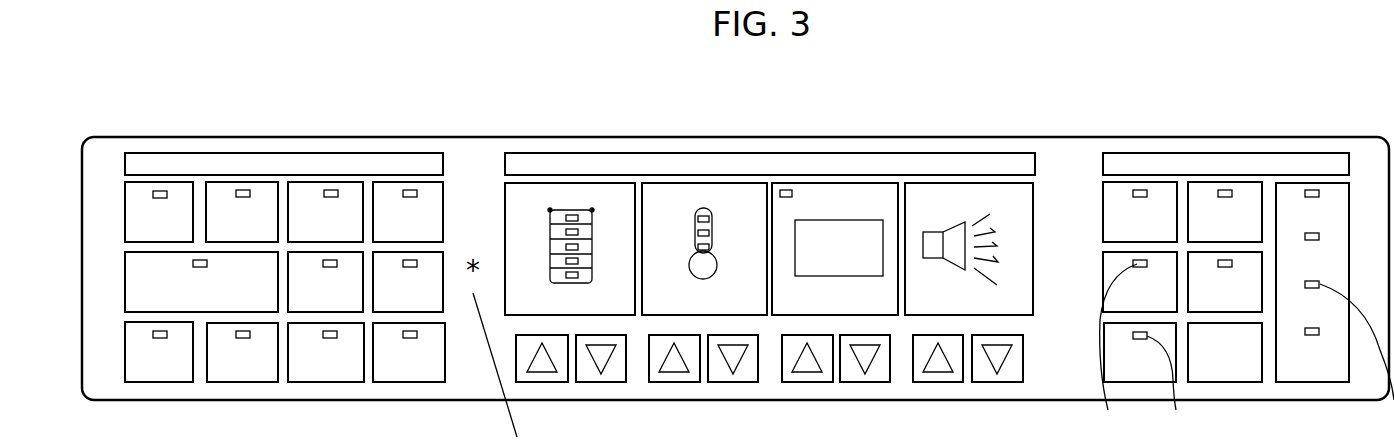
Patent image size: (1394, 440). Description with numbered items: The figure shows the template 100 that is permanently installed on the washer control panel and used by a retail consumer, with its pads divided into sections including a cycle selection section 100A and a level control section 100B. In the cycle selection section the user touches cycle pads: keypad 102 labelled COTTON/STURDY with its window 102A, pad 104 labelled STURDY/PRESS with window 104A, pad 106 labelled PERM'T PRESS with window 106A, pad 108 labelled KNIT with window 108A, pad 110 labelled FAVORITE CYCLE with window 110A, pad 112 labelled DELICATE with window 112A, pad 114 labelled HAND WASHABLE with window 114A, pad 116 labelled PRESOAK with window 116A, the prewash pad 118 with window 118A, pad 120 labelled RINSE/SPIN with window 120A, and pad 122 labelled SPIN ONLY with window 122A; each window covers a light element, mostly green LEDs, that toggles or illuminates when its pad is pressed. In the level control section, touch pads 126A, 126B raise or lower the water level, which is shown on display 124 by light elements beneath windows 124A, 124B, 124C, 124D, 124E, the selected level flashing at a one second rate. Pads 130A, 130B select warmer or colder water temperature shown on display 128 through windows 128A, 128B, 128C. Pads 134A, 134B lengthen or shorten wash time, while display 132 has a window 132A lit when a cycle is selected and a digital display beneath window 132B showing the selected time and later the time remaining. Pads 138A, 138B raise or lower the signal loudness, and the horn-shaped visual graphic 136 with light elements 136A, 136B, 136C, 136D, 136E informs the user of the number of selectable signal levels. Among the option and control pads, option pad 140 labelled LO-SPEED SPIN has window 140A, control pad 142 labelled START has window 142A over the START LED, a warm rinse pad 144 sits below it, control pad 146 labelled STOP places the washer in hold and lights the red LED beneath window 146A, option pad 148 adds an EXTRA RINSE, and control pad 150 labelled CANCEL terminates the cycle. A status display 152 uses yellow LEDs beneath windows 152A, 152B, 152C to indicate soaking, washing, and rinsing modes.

The template 100 is at (99, 150).
The cycle selection section 100A is at (186, 137).
The level control section 100B is at (795, 165).
The keypad 102 is at (132, 215).
The window 102A is at (153, 194).
The pad 104 is at (268, 190).
The window 104A is at (240, 193).
The pad 106 is at (348, 190).
The window 106A is at (325, 193).
The pad 108 is at (428, 197).
The window 108A is at (407, 193).
The pad 110 is at (132, 275).
The window 110A is at (193, 263).
The pad 112 is at (353, 265).
The window 112A is at (337, 262).
The pad 114 is at (438, 265).
The window 114A is at (412, 262).
The pad 116 is at (132, 348).
The window 116A is at (153, 334).
The pad 118 is at (260, 375).
The window 118A is at (238, 334).
The pad 120 is at (352, 372).
The window 120A is at (325, 334).
The pad 122 is at (408, 372).
The window 122A is at (414, 334).
The display 124 is at (540, 240).
The window 124A is at (572, 215).
The window 124B is at (578, 232).
The window 124C is at (578, 247).
The window 124D is at (578, 261).
The window 124E is at (578, 275).
The touch pad 126A is at (545, 365).
The touch pad 126B is at (604, 360).
The display 128 is at (685, 226).
The window 128A is at (705, 218).
The window 128B is at (712, 232).
The window 128C is at (712, 246).
The pad 130A is at (678, 365).
The pad 130B is at (740, 360).
The display 132 is at (843, 205).
The window 132A is at (793, 192).
The window 132B is at (865, 240).
The pad 134A is at (808, 365).
The pad 134B is at (868, 360).
The visual graphic 136 is at (940, 215).
The light element 136A is at (988, 216).
The light element 136B is at (995, 232).
The light element 136C is at (997, 246).
The light element 136D is at (998, 262).
The light element 136E is at (997, 285).
The pad 138A is at (945, 368).
The pad 138B is at (1000, 360).
The option pad 140 is at (1163, 192).
The window 140A is at (1140, 192).
The control pad 142 is at (1252, 190).
The window 142A is at (1227, 192).
The warm rinse button 144 is at (1138, 331).
The control pad 146 is at (1225, 282).
The window 146A is at (1237, 265).
The option pad 148 is at (1131, 375).
The control pad 150 is at (1207, 373).
The display 152 is at (1337, 268).
The window 152A is at (1313, 190).
The window 152B is at (1320, 236).
The window 152C is at (1320, 331).